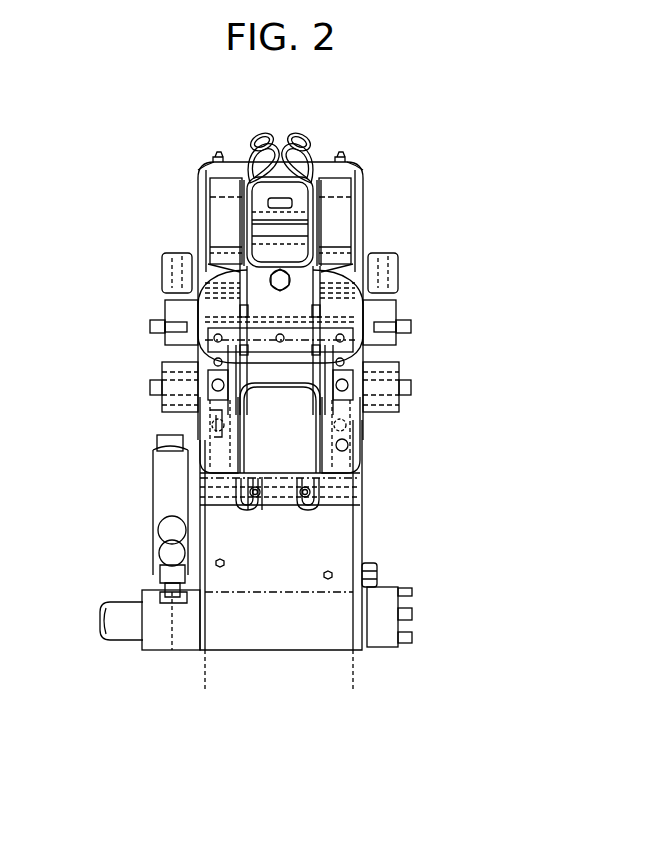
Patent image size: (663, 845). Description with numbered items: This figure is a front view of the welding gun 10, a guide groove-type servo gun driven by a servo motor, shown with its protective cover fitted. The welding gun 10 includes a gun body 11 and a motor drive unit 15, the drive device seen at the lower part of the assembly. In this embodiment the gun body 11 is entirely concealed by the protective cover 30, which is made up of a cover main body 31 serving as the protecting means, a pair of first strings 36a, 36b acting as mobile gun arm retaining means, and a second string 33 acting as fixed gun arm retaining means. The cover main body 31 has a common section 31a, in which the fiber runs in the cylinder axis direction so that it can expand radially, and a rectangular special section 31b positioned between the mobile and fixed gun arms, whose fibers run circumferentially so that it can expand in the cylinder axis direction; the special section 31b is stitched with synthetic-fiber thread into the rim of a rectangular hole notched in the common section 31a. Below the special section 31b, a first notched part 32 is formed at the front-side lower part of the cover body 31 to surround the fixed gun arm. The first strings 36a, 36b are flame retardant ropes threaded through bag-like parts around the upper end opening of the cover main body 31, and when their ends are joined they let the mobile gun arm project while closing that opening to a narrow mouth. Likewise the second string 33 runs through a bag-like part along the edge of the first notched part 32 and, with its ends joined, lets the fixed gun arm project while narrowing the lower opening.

The welding gun 10 is at (295, 399).
The gun body 11 is at (365, 232).
The motor drive unit 15 is at (366, 540).
The protective cover 30 is at (243, 303).
The cover main body 31 is at (197, 219).
The common section 31a is at (336, 212).
The special section 31b is at (370, 311).
The first notched part 32 is at (312, 440).
The second string 33 is at (253, 512).
The first string 36a is at (316, 160).
The first string 36b is at (307, 142).